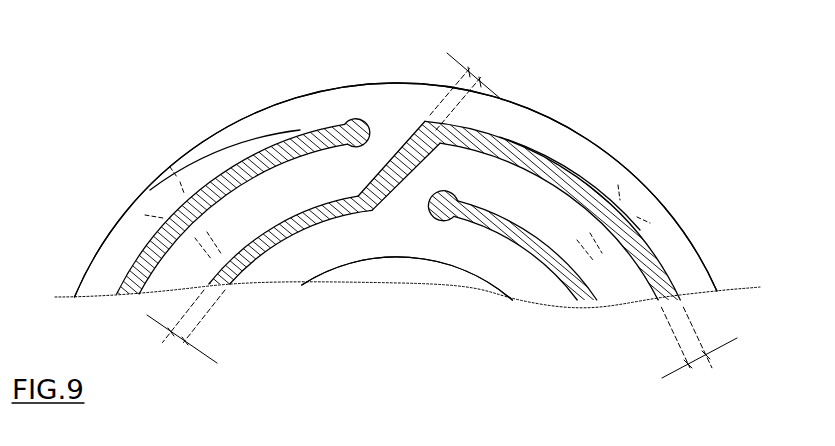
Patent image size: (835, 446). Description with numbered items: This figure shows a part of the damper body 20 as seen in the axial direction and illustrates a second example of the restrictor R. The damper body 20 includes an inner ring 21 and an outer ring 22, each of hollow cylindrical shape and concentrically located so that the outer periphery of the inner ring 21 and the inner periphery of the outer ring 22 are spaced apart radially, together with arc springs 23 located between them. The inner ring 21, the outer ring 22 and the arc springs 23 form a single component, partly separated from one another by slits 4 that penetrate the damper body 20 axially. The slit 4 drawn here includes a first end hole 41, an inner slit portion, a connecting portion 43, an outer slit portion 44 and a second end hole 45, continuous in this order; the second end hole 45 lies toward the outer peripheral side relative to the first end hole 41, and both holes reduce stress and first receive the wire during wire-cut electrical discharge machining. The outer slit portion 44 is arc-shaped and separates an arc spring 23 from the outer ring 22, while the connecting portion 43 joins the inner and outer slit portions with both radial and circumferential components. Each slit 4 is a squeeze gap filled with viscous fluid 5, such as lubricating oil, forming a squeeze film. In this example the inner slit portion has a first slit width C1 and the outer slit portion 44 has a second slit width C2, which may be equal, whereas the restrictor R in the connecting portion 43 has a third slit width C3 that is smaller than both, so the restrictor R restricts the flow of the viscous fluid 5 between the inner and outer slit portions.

The slit 4 is at (217, 189).
The viscous fluid 5 is at (390, 189).
The damper body 20 is at (679, 124).
The inner ring 21 is at (288, 265).
The outer ring 22 is at (263, 133).
The arc spring 23 is at (193, 272).
The first end hole 41 is at (450, 222).
The connecting portion 43 is at (410, 138).
The outer slit portion 44 is at (605, 155).
The second end hole 45 is at (345, 121).
The first slit width C1 is at (178, 337).
The second slit width C2 is at (700, 362).
The third slit width C3 is at (478, 74).
The restrictor R is at (410, 222).